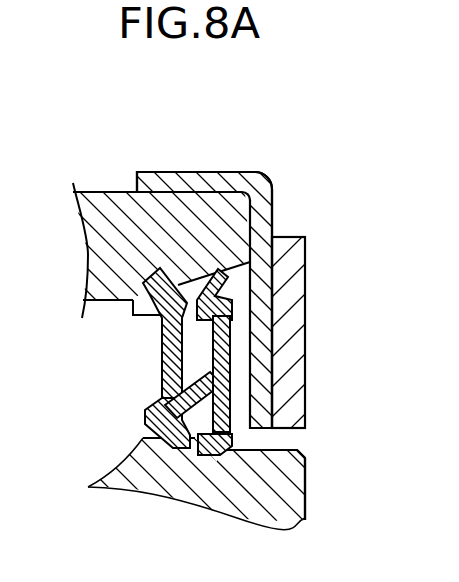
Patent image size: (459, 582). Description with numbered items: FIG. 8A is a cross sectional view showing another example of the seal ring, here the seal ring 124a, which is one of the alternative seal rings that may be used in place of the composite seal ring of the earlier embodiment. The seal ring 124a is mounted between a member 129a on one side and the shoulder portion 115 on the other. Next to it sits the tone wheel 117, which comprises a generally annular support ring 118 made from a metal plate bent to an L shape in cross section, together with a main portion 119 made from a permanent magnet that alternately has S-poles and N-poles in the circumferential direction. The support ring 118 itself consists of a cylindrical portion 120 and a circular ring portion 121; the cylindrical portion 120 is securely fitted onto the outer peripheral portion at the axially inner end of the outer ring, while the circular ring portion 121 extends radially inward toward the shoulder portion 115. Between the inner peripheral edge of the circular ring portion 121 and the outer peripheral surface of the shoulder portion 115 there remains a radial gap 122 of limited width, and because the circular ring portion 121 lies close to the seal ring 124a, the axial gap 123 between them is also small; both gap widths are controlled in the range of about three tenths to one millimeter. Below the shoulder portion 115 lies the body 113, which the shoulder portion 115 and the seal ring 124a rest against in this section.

The base member 113 is at (290, 506).
The shoulder portion 115 is at (287, 476).
The tone wheel 117 is at (257, 163).
The support ring 118 is at (350, 168).
The main portion 119 is at (298, 268).
The cylindrical portion 120 is at (178, 171).
The circular ring portion 121 is at (269, 213).
The radial gap 122 is at (293, 444).
The axial gap 123 is at (243, 322).
The seal ring 124a is at (202, 360).
The housing portion 129a is at (108, 205).